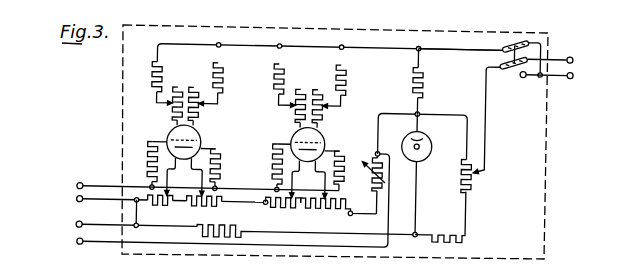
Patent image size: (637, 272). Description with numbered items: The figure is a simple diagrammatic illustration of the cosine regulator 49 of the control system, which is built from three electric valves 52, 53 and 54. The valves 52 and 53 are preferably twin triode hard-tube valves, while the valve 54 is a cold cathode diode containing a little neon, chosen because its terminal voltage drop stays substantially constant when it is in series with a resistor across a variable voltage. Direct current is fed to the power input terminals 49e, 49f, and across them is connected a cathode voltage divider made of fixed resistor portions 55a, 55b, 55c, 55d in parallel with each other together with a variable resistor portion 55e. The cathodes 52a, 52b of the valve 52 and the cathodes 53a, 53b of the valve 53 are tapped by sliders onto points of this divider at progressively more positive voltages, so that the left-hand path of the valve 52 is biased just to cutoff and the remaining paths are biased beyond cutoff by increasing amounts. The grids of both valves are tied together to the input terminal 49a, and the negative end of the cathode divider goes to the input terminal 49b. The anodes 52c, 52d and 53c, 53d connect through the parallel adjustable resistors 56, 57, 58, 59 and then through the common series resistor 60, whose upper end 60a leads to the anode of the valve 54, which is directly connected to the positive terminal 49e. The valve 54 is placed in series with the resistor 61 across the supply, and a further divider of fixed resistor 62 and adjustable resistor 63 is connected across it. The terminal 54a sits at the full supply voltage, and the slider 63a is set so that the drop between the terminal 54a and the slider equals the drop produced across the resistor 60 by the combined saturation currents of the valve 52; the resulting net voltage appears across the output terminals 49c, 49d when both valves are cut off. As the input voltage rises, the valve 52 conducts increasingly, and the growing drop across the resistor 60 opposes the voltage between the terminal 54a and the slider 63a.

The cosine regulator 49 is at (549, 123).
The input terminal 49a is at (83, 184).
The input terminal 49b is at (80, 199).
The output terminal 49c is at (573, 53).
The output terminal 49d is at (574, 69).
The power input terminal 49e is at (81, 242).
The power input terminal 49f is at (80, 225).
The electric valve 52 is at (206, 138).
The cathode 52a is at (168, 142).
The cathode 52b is at (218, 149).
The anode 52c is at (176, 131).
The anode 52d is at (197, 133).
The electric valve 53 is at (327, 140).
The cathode 53a is at (293, 142).
The cathode 53b is at (343, 149).
The anode 53c is at (300, 131).
The anode 53d is at (322, 133).
The electric valve 54 is at (436, 145).
The terminal 54a is at (420, 118).
The fixed resistor portion 55a is at (153, 205).
The fixed resistor portion 55b is at (206, 205).
The fixed resistor portion 55c is at (270, 205).
The fixed resistor portion 55d is at (320, 209).
The variable resistor portion 55e is at (375, 174).
The adjustable resistor 56 is at (176, 93).
The adjustable resistor 57 is at (197, 93).
The adjustable resistor 58 is at (298, 93).
The adjustable resistor 59 is at (321, 93).
The series resistor 60 is at (425, 85).
The terminal 60a is at (417, 44).
The resistor 61 is at (207, 224).
The fixed resistor 62 is at (448, 229).
The adjustable resistor 63 is at (464, 172).
The slider 63a is at (480, 174).